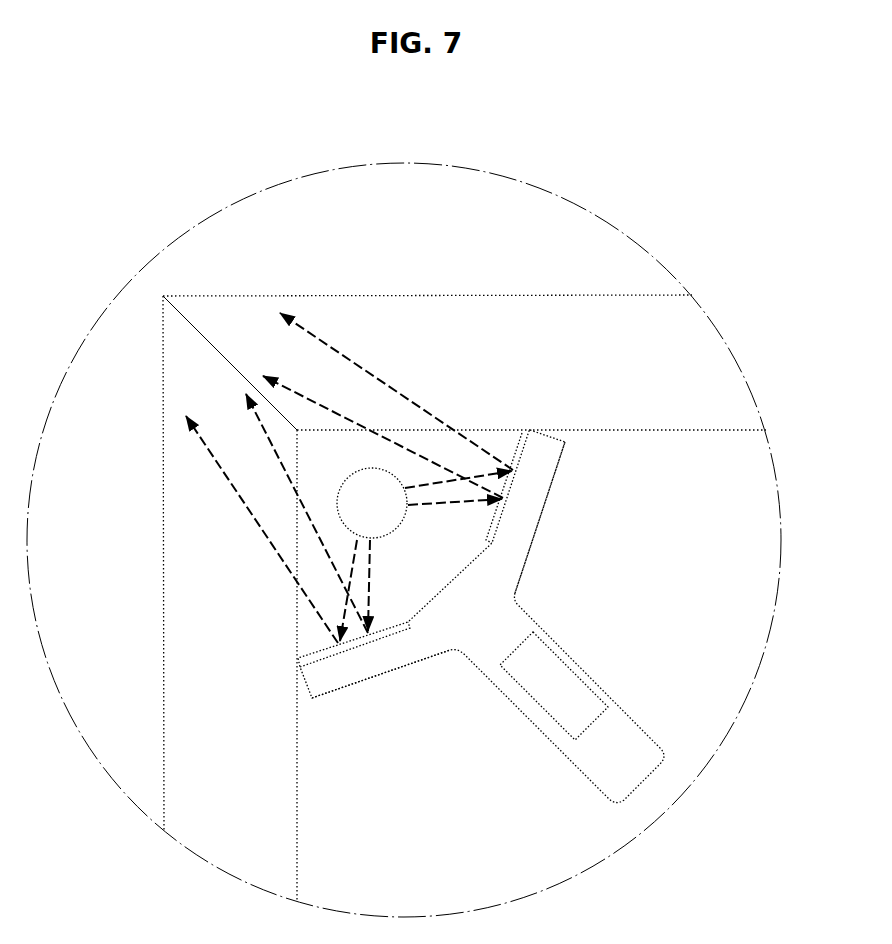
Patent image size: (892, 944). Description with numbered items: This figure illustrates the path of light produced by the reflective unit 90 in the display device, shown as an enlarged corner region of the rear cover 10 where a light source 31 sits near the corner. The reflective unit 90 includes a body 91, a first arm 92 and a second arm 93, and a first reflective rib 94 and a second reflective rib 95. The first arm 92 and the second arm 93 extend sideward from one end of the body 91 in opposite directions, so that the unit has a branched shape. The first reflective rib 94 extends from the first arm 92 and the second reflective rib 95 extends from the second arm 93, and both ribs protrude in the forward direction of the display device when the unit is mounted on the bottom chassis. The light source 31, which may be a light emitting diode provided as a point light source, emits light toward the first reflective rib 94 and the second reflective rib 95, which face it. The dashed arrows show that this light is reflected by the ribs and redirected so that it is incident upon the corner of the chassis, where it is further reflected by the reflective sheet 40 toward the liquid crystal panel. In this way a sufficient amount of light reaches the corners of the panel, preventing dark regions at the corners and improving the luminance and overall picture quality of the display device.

The rear cover 10 is at (558, 313).
The light source 31 is at (397, 535).
The reflective sheet 40 is at (752, 543).
The reflective unit 90 is at (489, 616).
The body 91 is at (626, 728).
The first arm 92 is at (537, 495).
The second arm 93 is at (404, 650).
The first reflective rib 94 is at (526, 455).
The second reflective rib 95 is at (372, 648).